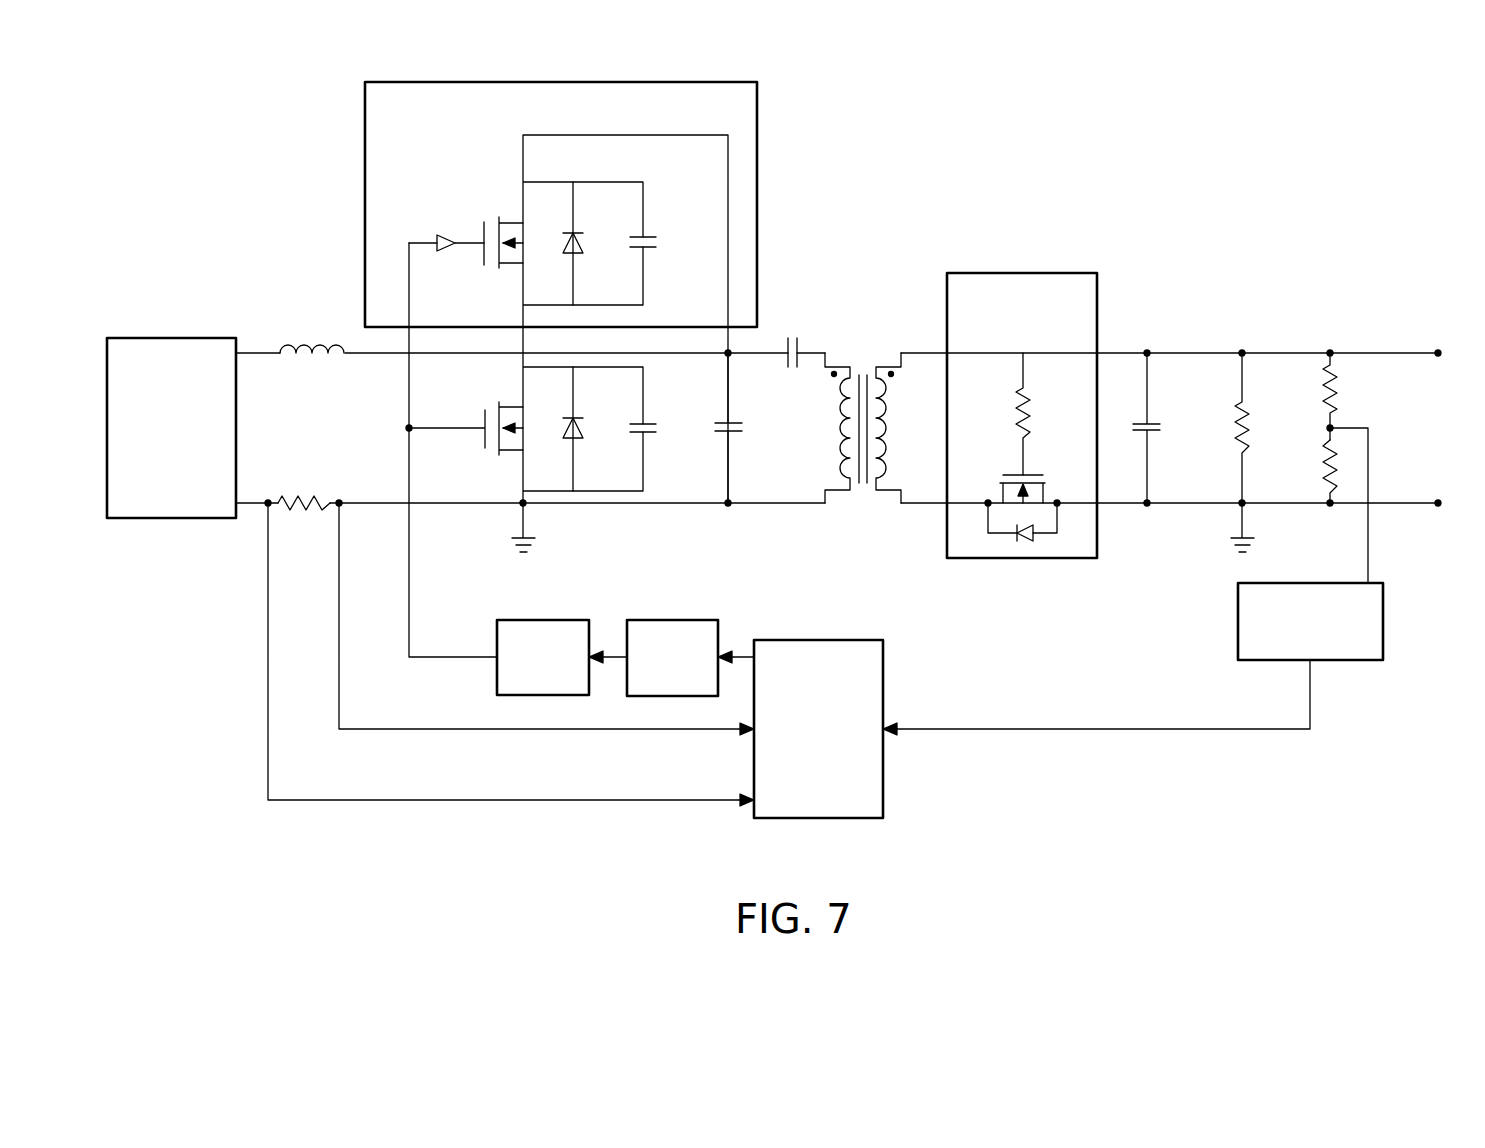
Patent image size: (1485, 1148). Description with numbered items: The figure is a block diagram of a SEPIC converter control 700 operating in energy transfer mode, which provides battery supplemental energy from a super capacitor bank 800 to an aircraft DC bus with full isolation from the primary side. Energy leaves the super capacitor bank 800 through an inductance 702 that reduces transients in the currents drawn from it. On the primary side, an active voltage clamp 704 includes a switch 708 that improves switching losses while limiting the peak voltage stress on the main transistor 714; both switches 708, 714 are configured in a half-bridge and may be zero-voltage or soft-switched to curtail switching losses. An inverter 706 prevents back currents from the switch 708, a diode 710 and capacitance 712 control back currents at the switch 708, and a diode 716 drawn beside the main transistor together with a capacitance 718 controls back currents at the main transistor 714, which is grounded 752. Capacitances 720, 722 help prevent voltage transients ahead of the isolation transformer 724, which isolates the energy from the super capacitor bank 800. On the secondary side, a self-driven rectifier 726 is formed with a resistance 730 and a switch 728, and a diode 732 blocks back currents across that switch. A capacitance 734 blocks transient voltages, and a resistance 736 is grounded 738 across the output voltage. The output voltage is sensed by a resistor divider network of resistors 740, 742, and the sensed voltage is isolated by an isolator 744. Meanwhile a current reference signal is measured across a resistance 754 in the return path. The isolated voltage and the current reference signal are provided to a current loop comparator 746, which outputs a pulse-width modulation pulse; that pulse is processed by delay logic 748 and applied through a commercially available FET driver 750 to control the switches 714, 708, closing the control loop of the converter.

The SEPIC converter control 700 is at (1248, 165).
The inductance 702 is at (300, 345).
The active voltage clamp 704 is at (757, 118).
The inverter 706 is at (444, 231).
The switch 708 is at (487, 270).
The diode 710 is at (584, 246).
The capacitance 712 is at (662, 244).
The main transistor 714 is at (486, 454).
The body diode 716 is at (580, 435).
The capacitance 718 is at (656, 428).
The capacitance 720 is at (745, 428).
The capacitance 722 is at (792, 335).
The isolation transformer 724 is at (863, 490).
The self-driven rectifier 726 is at (1023, 273).
The switch 728 is at (1046, 479).
The resistance 730 is at (1035, 415).
The diode 732 is at (1028, 544).
The capacitance 734 is at (1154, 434).
The resistance 736 is at (1238, 405).
The ground 738 is at (1235, 538).
The resistor 740 is at (1338, 390).
The resistor 742 is at (1320, 470).
The isolator 744 is at (1355, 660).
The current loop comparator 746 is at (830, 640).
The delay logic 748 is at (678, 620).
The FET driver 750 is at (562, 620).
The ground 752 is at (516, 540).
The resistance 754 is at (302, 495).
The super capacitor bank 800 is at (158, 518).